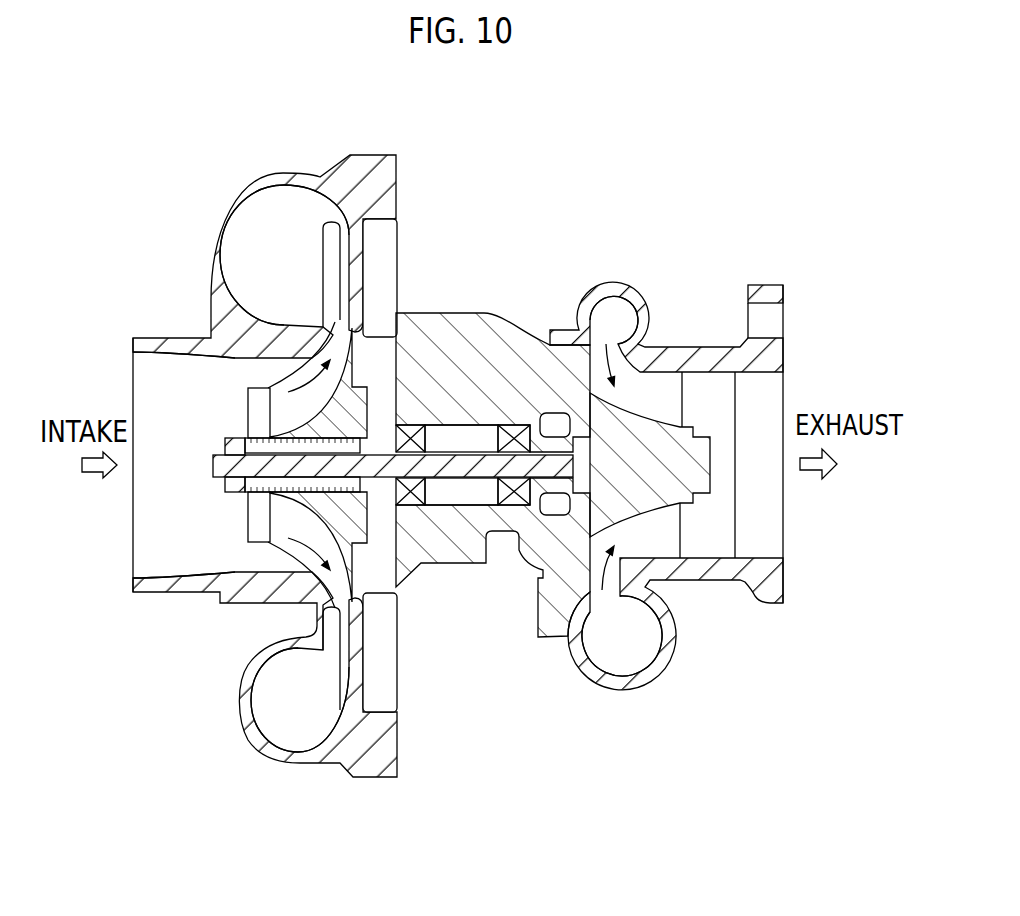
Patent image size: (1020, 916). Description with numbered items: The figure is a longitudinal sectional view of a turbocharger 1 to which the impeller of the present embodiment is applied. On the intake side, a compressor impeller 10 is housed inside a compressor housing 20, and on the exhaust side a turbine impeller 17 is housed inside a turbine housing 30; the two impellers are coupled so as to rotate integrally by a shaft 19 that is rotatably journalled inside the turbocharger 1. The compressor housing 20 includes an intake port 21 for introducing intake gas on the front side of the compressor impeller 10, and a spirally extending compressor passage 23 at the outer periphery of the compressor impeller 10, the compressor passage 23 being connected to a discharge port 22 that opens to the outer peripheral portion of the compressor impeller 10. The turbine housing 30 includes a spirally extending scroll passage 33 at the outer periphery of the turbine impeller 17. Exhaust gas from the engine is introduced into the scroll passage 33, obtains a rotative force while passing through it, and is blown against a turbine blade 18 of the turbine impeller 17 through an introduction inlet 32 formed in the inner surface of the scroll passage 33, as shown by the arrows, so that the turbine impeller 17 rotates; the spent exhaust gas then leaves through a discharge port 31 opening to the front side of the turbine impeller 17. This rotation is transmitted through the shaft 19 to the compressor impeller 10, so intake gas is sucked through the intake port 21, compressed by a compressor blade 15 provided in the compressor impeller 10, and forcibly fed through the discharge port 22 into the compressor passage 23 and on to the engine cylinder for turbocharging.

The turbocharger 1 is at (143, 250).
The compressor impeller 10 is at (245, 435).
The compressor blade 15 is at (280, 518).
The turbine impeller 17 is at (687, 427).
The turbine blade 18 is at (700, 528).
The shaft 19 is at (447, 447).
The compressor housing 20 is at (187, 588).
The intake port 21 is at (158, 580).
The discharge port 22 is at (350, 306).
The compressor passage 23 is at (299, 271).
The turbine housing 30 is at (713, 582).
The discharge port 31 is at (745, 558).
The introduction inlet 32 is at (618, 347).
The scroll passage 33 is at (624, 332).